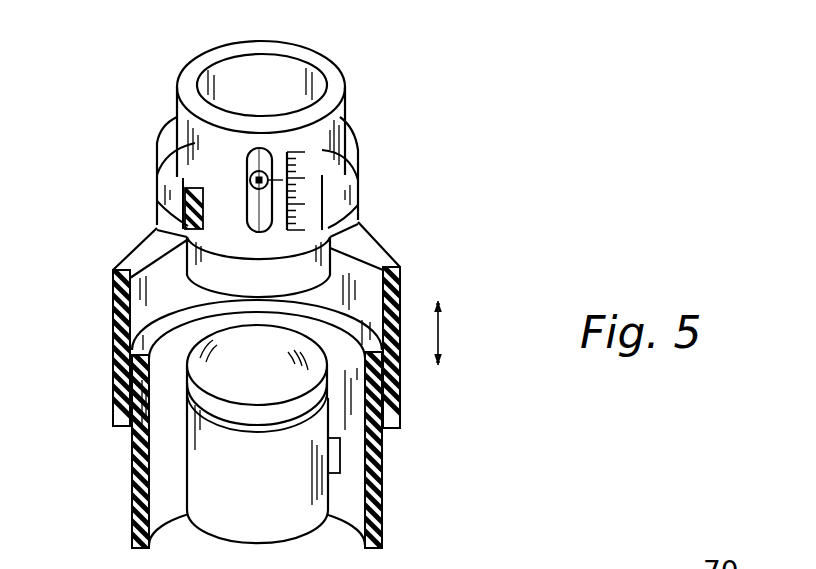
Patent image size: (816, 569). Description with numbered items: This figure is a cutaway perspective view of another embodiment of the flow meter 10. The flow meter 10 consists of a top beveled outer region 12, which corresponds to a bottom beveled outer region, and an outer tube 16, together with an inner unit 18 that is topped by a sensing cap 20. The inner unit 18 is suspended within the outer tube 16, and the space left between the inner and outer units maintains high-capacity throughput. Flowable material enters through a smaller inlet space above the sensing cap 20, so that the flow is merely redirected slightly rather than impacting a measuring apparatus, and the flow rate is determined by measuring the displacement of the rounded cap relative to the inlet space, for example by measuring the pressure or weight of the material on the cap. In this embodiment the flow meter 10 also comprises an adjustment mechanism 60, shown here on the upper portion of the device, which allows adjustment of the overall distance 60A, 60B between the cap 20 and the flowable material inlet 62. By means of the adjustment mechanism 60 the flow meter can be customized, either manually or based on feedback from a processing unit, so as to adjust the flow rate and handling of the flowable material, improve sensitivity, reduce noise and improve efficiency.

The flow meter 10 is at (428, 122).
The top beveled outer region 12 is at (390, 245).
The outer tube 16 is at (390, 482).
The inner unit 18 is at (205, 478).
The sensing cap 20 is at (178, 369).
The adjustment mechanism 60 is at (250, 176).
The overall distance 60A is at (330, 299).
The overall distance 60B is at (333, 366).
The flowable material inlet 62 is at (180, 289).